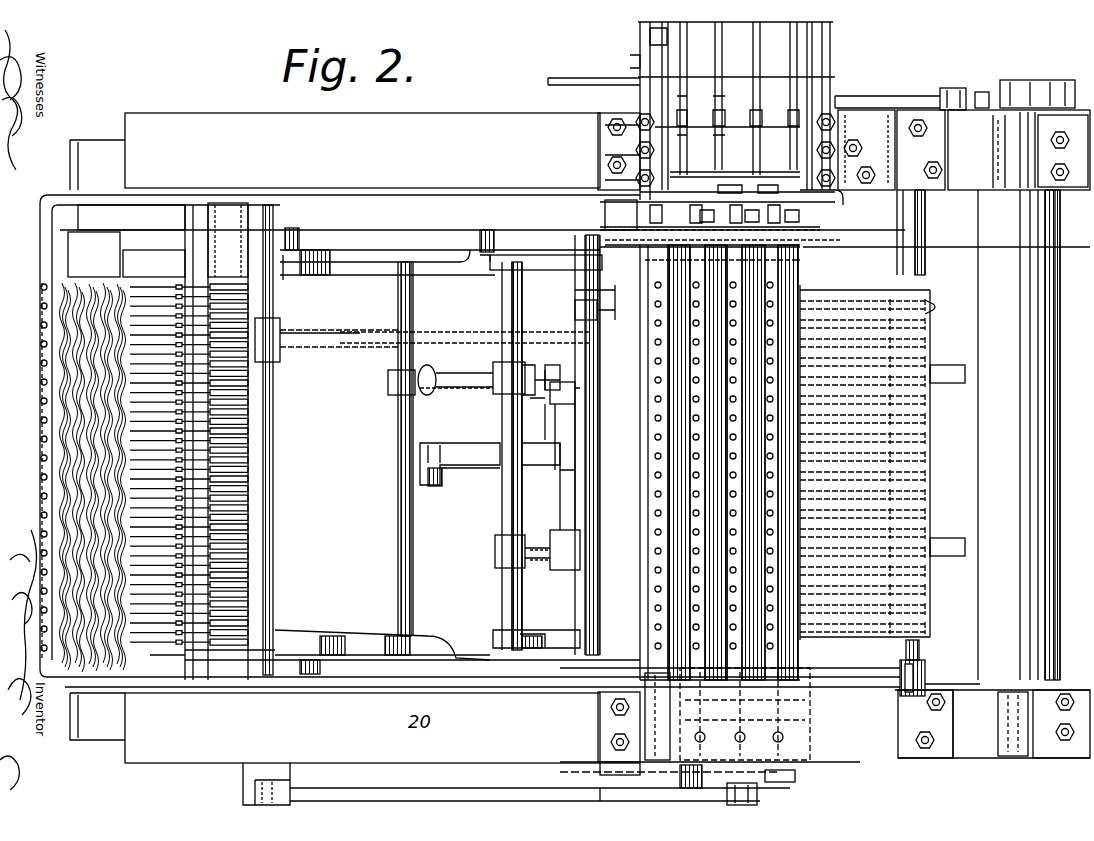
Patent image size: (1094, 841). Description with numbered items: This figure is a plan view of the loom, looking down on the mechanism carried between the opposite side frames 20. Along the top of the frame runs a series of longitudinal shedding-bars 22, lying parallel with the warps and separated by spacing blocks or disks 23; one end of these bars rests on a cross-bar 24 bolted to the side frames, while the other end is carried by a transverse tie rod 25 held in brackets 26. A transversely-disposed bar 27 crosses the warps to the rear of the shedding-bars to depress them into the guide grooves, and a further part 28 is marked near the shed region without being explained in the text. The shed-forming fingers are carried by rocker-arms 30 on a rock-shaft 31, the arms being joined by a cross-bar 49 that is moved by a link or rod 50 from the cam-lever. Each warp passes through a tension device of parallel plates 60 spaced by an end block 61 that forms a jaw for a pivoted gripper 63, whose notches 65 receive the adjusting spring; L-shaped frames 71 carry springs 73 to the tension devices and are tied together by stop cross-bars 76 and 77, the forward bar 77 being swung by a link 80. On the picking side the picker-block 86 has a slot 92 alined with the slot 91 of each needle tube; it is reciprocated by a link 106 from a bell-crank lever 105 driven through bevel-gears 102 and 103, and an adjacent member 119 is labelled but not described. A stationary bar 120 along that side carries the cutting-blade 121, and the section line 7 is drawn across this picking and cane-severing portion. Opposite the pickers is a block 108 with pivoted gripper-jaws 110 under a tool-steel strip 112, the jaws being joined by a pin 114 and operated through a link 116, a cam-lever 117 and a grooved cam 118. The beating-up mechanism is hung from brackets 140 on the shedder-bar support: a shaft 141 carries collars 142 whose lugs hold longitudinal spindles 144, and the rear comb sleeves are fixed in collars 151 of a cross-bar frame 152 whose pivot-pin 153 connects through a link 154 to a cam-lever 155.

The side frames 20 is at (355, 151).
The top mechanism 7 is at (745, 51).
The notches 65 is at (818, 40).
The link 106 is at (571, 78).
The bell-crank lever 105 is at (890, 96).
The bevel-gear 102 is at (975, 88).
The bevel-gear 103 is at (1036, 82).
The slot 91 is at (714, 118).
The slot 92 is at (701, 138).
The picker-block 86 is at (733, 172).
The bar 119 is at (762, 190).
The stationary bar 120 is at (822, 208).
The cutting-blade 121 is at (720, 228).
The rock-shaft 31 is at (720, 245).
The cross-bar 24 is at (605, 211).
The rocker-arms 30 is at (383, 229).
The cross-bar 77 is at (272, 232).
The L-shaped frames 71 is at (131, 218).
The springs 73 is at (90, 271).
The cross-bar 76 is at (182, 260).
The end block 61 is at (228, 280).
The parallel plates 60 is at (250, 433).
The pivoted gripper 63 is at (195, 658).
The link 80 is at (334, 350).
The cross-bar 49 is at (396, 436).
The brackets 140 is at (494, 642).
The shaft 141 is at (500, 592).
The collars 142 is at (493, 360).
The spindles 144 is at (551, 489).
The collars 151 is at (562, 372).
The frame 152 is at (565, 420).
The pivot-pin 153 is at (575, 486).
The link 154 is at (480, 478).
The cam-lever 155 is at (465, 445).
The link or rod 50 is at (462, 394).
The block 28 is at (574, 298).
The transversely-disposed bar 27 is at (580, 606).
The shedding-bars 22 is at (842, 300).
The spacing blocks or disks 23 is at (933, 308).
The tie rod or bar 25 is at (921, 648).
The brackets 26 is at (927, 238).
The block 108 is at (806, 722).
The gripper-jaws 110 is at (758, 702).
The strip of tool-steel 112 is at (730, 715).
The cam-lever 117 is at (540, 783).
The grooved cam 118 is at (558, 762).
The link 116 is at (758, 790).
The pin 114 is at (798, 778).